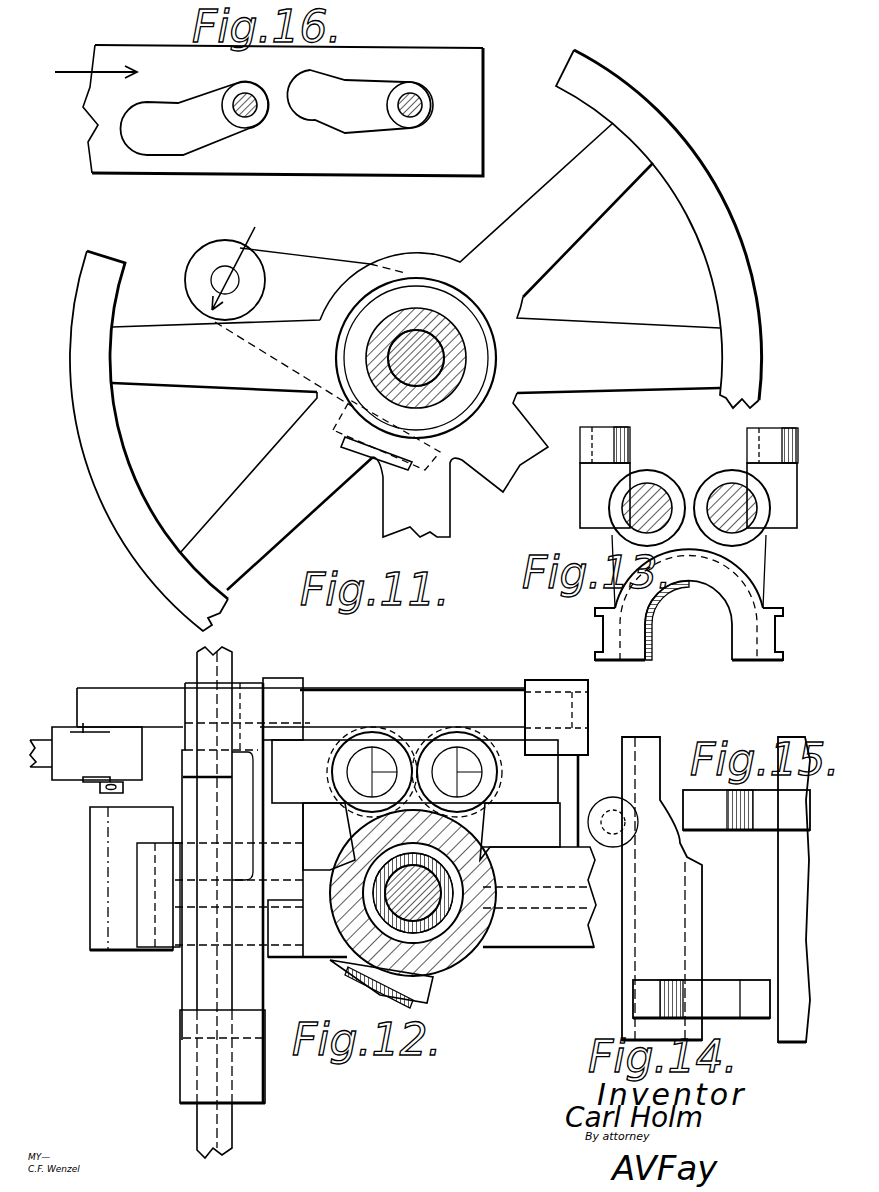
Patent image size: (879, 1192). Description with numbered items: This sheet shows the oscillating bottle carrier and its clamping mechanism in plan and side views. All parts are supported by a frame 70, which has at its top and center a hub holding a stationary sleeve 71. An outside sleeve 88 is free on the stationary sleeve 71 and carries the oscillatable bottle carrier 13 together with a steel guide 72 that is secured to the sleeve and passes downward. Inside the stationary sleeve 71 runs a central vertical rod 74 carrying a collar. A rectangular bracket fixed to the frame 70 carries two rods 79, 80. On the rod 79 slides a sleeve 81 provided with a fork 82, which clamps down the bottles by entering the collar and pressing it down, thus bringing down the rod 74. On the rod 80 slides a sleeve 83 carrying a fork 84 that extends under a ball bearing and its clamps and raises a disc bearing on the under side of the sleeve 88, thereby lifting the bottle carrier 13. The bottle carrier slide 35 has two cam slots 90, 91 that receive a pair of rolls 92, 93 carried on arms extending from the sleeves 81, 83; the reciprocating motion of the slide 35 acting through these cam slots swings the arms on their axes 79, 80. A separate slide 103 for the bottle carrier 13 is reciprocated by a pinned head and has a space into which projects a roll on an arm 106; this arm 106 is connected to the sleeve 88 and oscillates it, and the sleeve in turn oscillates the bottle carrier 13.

In FIG. 11, the oscillatable bottle carrier 13 is at (696, 280).
In FIG. 16, the bottle carrier slide 35 is at (92, 161).
In FIG. 12, the bottle carrier slide 35 is at (119, 696).
In FIG. 12, the frame 70 is at (560, 950).
In FIG. 11, the stationary sleeve 71 is at (455, 372).
In FIG. 12, the stationary sleeve 71 is at (445, 918).
In FIG. 11, the steel guide 72 is at (382, 466).
In FIG. 12, the steel guide 72 is at (352, 980).
In FIG. 11, the central vertical rod 74 is at (432, 345).
In FIG. 12, the central vertical rod 74 is at (438, 885).
In FIG. 13, the rod 79 is at (643, 490).
In FIG. 12, the rod 79 is at (360, 779).
In FIG. 13, the rod 80 is at (732, 490).
In FIG. 12, the rod 80 is at (467, 775).
In FIG. 13, the sleeve 81 is at (610, 497).
In FIG. 14, the sleeve 81 is at (692, 912).
In FIG. 13, the fork 82 is at (656, 616).
In FIG. 12, the fork 82 is at (348, 828).
In FIG. 14, the fork 82 is at (714, 983).
In FIG. 13, the sleeve 83 is at (708, 492).
In FIG. 15, the sleeve 83 is at (782, 893).
In FIG. 13, the fork 84 is at (770, 633).
In FIG. 12, the fork 84 is at (482, 828).
In FIG. 15, the fork 84 is at (762, 830).
In FIG. 11, the outside sleeve 88 is at (470, 418).
In FIG. 12, the outside sleeve 88 is at (470, 958).
In FIG. 16, the cam slot 90 is at (208, 138).
In FIG. 16, the cam slot 91 is at (330, 122).
In FIG. 16, the roll 92 is at (232, 110).
In FIG. 13, the roll 92 is at (586, 430).
In FIG. 12, the roll 92 is at (332, 685).
In FIG. 16, the roll 93 is at (396, 108).
In FIG. 13, the roll 93 is at (755, 432).
In FIG. 12, the roll 93 is at (528, 690).
In FIG. 12, the slide 103 is at (215, 1132).
In FIG. 11, the arm 106 is at (322, 264).